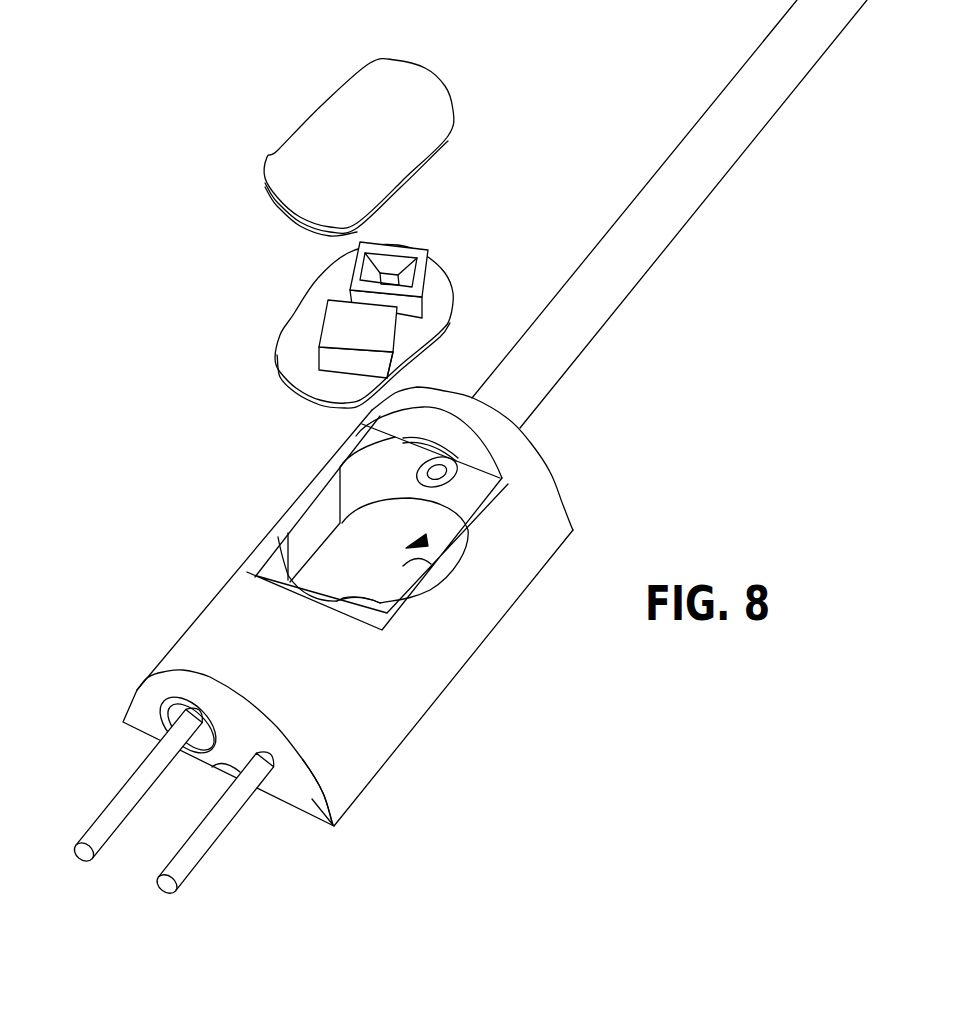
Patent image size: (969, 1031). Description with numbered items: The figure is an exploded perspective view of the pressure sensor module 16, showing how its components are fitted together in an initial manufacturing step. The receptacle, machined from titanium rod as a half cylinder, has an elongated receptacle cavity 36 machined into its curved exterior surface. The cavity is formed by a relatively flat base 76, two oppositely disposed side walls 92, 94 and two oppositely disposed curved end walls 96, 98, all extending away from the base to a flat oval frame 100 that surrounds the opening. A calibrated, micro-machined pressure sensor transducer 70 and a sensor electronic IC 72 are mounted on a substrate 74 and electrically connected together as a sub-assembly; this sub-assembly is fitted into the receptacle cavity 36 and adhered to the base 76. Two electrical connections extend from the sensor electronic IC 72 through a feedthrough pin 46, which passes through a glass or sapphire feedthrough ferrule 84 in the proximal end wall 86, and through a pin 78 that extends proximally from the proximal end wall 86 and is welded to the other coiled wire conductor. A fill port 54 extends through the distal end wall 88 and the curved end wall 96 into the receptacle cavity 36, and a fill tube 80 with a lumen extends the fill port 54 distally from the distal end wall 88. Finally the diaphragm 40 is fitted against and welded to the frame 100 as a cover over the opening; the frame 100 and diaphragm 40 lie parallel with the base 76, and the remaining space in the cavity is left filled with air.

The pressure sensor module 16 is at (766, 297).
The receptacle cavity 36 is at (425, 540).
The diaphragm 40 is at (440, 97).
The feedthrough pin 46 is at (110, 807).
The fill port 54 is at (437, 470).
The pressure sensor transducer 70 is at (428, 249).
The sensor electronic IC 72 is at (333, 312).
The substrate 74 is at (448, 297).
The flat base 76 is at (310, 568).
The pin 78 is at (213, 833).
The fill tube 80 is at (737, 142).
The feedthrough ferrule 84 is at (168, 702).
The proximal end wall 86 is at (335, 830).
The distal end wall 88 is at (560, 477).
The side wall 92 is at (318, 517).
The side wall 94 is at (406, 573).
The curved end wall 96 is at (403, 455).
The curved end wall 98 is at (380, 597).
The flat oval frame 100 is at (368, 434).